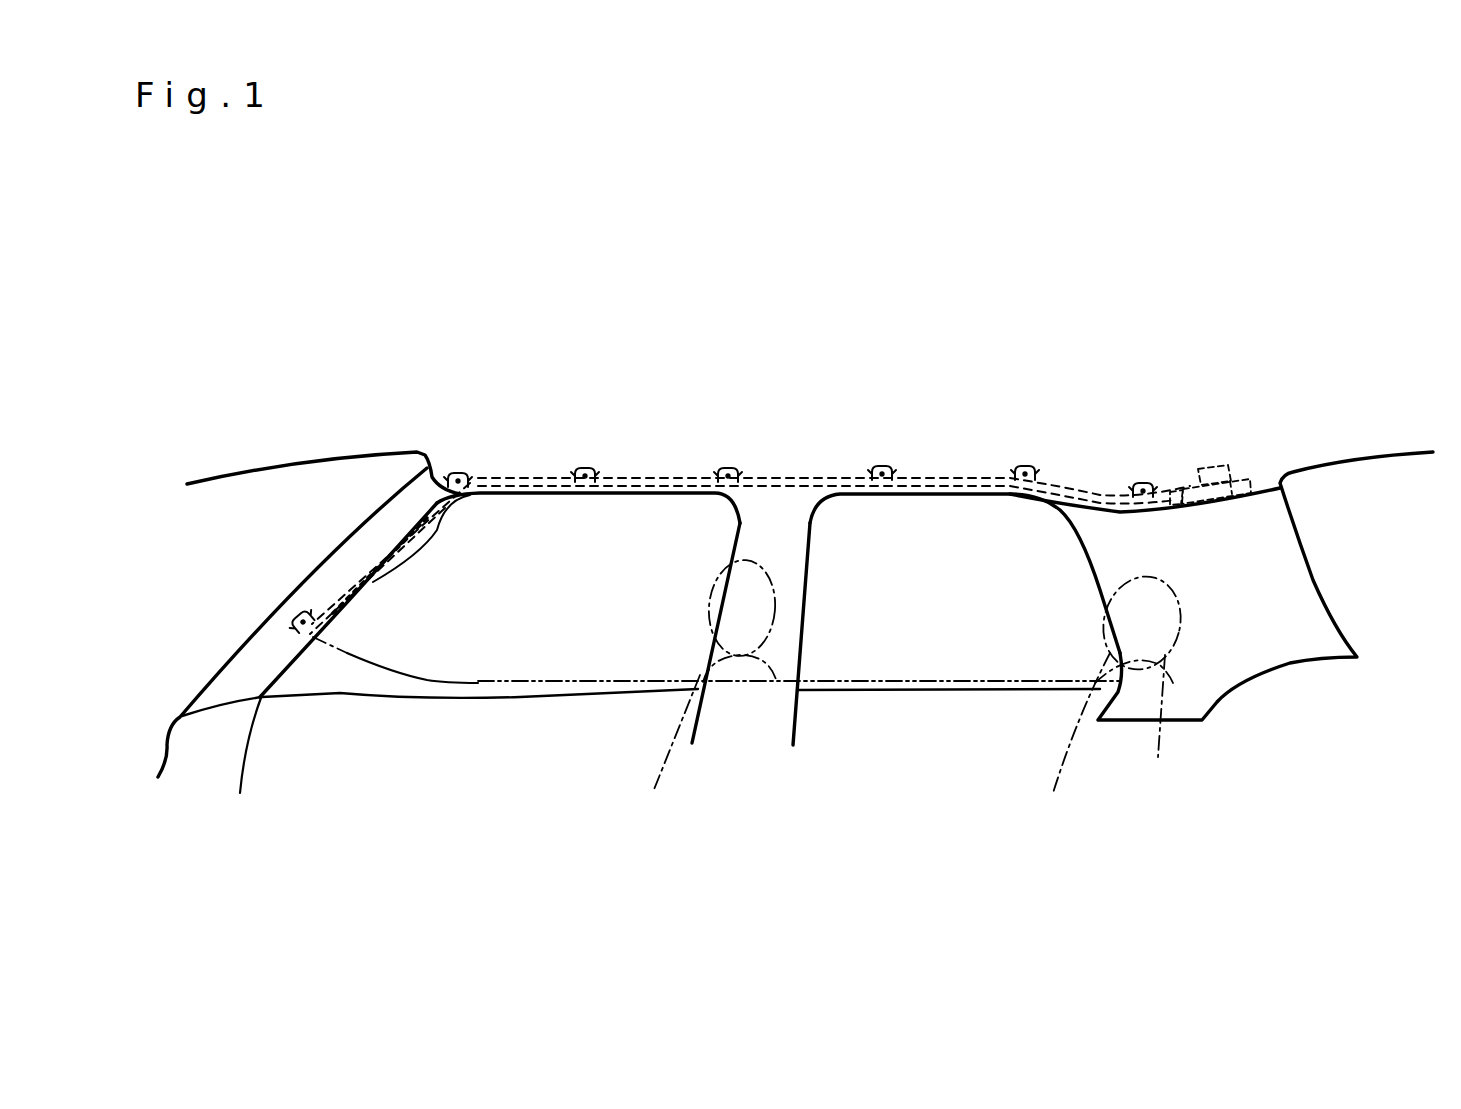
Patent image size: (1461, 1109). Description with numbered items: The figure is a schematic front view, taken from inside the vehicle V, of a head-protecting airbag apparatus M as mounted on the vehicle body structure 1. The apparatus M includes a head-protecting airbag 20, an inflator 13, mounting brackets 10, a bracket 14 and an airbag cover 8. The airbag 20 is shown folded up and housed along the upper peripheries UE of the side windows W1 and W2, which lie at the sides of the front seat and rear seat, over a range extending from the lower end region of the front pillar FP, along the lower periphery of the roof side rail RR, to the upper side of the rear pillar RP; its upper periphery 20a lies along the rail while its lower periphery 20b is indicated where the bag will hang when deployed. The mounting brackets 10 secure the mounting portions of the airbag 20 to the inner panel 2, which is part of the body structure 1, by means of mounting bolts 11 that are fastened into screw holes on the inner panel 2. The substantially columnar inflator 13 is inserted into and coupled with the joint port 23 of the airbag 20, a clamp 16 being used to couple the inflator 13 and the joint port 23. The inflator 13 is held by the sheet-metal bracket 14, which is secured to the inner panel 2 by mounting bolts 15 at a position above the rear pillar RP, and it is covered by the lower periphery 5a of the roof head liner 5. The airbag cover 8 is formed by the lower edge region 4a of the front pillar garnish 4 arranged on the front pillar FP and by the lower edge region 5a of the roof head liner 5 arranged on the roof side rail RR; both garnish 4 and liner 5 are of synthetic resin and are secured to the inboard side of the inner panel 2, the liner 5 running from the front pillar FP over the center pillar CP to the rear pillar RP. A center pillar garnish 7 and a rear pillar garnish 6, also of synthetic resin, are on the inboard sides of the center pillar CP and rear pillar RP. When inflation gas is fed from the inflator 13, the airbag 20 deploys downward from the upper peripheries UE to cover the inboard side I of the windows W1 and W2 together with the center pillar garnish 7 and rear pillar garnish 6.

The vehicle body structure 1 is at (701, 368).
The inner panel 2 is at (482, 422).
The front pillar garnish 4 is at (340, 563).
The lower edge region of front pillar garnish 4a is at (373, 582).
The roof head liner 5 is at (938, 460).
The lower periphery of roof head liner 5a is at (933, 493).
The rear pillar garnish 6 is at (1287, 635).
The center pillar garnish 7 is at (782, 663).
The airbag cover 8 is at (661, 643).
The mounting brackets 10 is at (593, 465).
The mounting bolts 11 is at (582, 465).
The inflator 13 is at (1253, 467).
The bracket 14 is at (1233, 503).
The mounting bolts 15 is at (1220, 467).
The clamp 16 is at (1172, 493).
The head-protecting airbag 20 is at (842, 475).
The upper periphery of airbag 20a is at (973, 503).
The lower periphery of airbag 20b is at (655, 670).
The joint port 23 is at (1177, 507).
The vehicle V is at (307, 302).
The front pillar FP is at (270, 640).
The center pillar CP is at (802, 643).
The rear pillar RP is at (1353, 592).
The roof side rail RR is at (672, 422).
The upper peripheries of side windows UE is at (525, 467).
The side window W1 is at (457, 692).
The side window W2 is at (998, 670).
The head-protecting airbag apparatus M is at (1266, 384).
The inboard side I is at (300, 780).